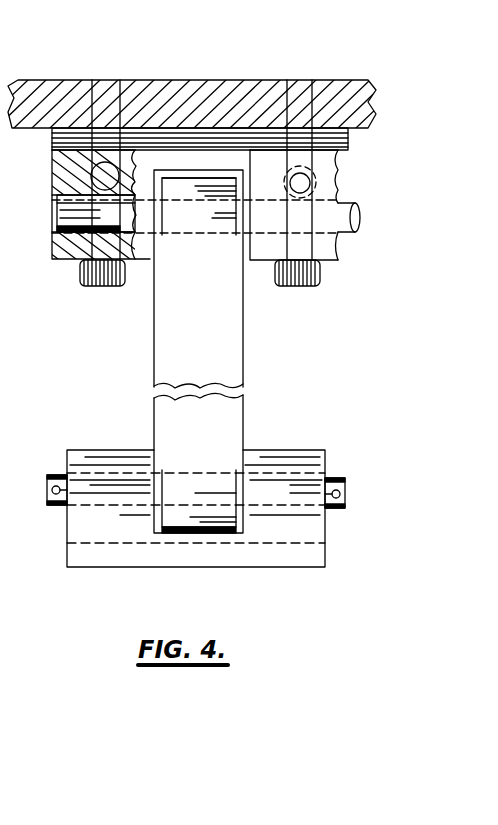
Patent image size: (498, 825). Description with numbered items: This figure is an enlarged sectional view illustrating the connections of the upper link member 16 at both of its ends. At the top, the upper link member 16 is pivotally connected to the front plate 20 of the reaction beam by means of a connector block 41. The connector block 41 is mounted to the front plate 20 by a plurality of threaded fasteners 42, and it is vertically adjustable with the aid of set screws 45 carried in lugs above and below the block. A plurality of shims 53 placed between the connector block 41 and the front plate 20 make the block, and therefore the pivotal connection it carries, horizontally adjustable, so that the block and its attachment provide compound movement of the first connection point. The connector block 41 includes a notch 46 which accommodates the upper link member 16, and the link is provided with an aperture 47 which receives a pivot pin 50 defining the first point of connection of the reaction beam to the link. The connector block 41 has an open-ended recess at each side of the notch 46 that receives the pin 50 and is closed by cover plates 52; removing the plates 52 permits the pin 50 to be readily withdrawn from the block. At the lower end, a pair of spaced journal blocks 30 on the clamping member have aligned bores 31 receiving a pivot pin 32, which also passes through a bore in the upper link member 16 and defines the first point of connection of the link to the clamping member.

The front plate 20 is at (70, 80).
The shims 53 is at (348, 142).
The connector block 41 is at (52, 165).
The set screws 45 is at (98, 178).
The pivot pin 50 is at (52, 228).
The cover plates 52 is at (72, 259).
The aperture 47 is at (185, 236).
The threaded fasteners 42 is at (104, 287).
The upper link member 16 is at (245, 300).
The notch 46 is at (204, 174).
The journal blocks 30 is at (80, 457).
The bores 31 is at (113, 474).
The pivot pin 32 is at (55, 506).